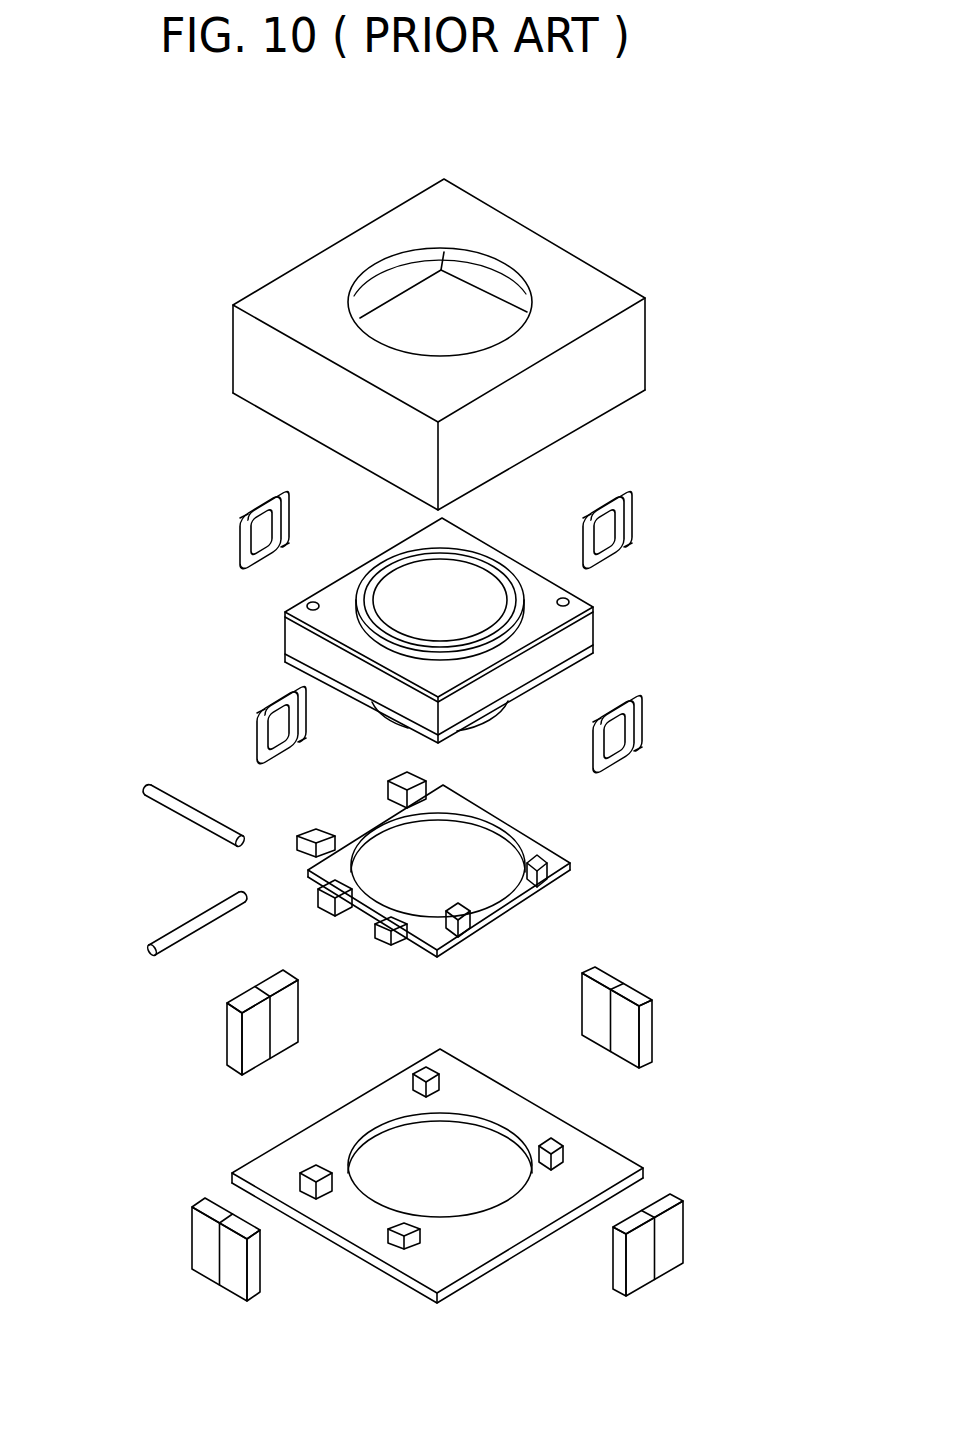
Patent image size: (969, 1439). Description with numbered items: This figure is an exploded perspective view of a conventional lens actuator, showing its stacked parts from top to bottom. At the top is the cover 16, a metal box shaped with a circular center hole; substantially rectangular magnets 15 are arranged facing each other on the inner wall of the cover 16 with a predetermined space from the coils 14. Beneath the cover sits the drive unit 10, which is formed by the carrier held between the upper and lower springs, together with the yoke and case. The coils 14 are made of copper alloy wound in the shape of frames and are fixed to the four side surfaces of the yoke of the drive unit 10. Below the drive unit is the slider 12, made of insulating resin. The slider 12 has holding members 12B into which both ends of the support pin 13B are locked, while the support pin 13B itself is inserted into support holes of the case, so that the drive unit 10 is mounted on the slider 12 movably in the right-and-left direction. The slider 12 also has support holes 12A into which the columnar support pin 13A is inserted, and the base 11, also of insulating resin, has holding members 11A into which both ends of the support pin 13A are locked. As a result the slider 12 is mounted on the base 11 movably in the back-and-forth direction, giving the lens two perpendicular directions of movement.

The drive unit 10 is at (285, 635).
The base 11 is at (503, 1267).
The holding members 11A is at (360, 1255).
The slider 12 is at (553, 882).
The support holes 12A is at (282, 937).
The holding members 12B is at (292, 795).
The support pin 13A is at (167, 812).
The support pin 13B is at (152, 937).
The moving coils 14 is at (483, 632).
The moving magnets 15 is at (480, 1134).
The cover 16 is at (645, 340).